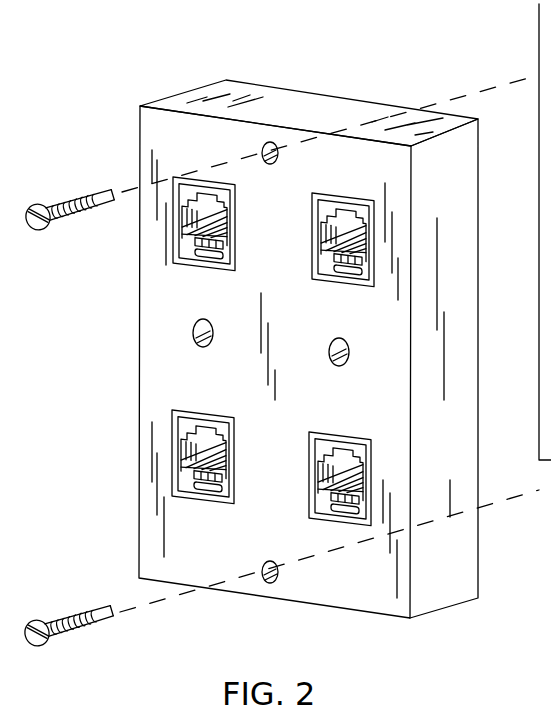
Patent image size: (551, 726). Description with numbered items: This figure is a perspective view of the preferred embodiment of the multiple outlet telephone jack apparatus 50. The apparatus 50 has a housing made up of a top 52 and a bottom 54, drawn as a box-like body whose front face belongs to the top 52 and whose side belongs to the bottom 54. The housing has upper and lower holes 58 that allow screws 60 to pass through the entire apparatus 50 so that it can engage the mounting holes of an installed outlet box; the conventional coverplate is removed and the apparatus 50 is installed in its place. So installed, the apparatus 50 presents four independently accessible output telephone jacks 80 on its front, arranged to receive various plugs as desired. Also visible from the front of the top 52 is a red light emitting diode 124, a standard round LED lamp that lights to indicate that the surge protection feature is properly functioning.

The multiple outlet telephone jack apparatus 50 is at (206, 54).
The top 52 is at (161, 313).
The bottom 54 is at (478, 540).
The upper and lower holes 58 is at (272, 142).
The screws 60 is at (72, 198).
The output telephone jacks 80 is at (362, 457).
The red light emitting diode (LED) 124 is at (198, 343).